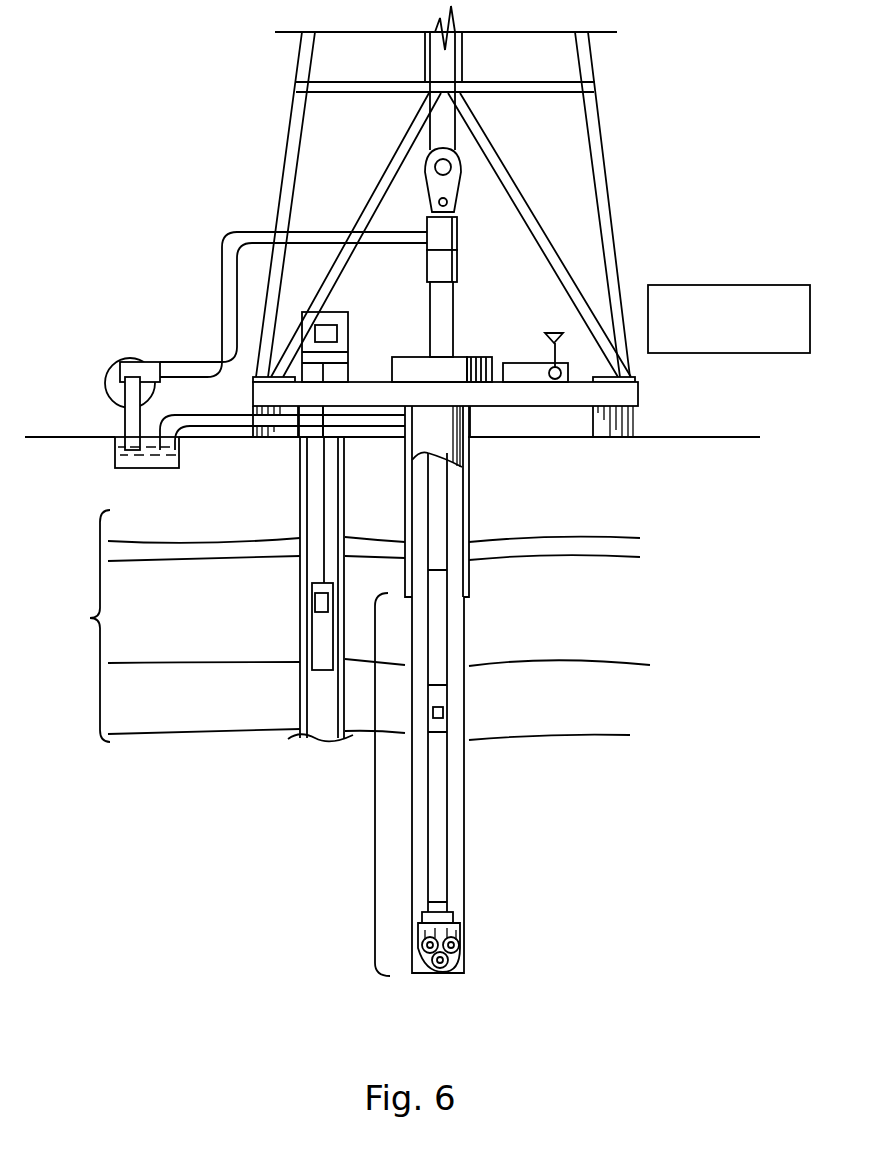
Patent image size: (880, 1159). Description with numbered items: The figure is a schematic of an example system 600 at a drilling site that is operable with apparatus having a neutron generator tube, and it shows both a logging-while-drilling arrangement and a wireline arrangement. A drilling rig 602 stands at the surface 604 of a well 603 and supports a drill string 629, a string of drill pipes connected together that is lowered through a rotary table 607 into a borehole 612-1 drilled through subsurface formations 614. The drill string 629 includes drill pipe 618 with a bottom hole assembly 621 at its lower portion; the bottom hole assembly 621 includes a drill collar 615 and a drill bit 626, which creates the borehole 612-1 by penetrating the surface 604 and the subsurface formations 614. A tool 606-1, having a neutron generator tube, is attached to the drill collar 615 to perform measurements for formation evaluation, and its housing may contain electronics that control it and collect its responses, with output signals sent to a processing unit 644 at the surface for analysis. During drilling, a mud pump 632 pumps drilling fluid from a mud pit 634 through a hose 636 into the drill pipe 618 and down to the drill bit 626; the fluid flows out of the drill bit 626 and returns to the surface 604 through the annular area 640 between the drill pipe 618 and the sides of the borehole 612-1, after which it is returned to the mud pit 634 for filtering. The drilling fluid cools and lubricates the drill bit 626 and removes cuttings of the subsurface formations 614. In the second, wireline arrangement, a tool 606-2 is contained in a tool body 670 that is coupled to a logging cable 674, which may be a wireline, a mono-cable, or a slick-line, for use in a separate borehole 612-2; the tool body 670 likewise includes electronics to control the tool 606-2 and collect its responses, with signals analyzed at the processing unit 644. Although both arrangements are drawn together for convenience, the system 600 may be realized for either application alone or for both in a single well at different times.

The system 600 is at (205, 58).
The drilling rig 602 is at (598, 101).
The well 603 is at (481, 435).
The surface 604 is at (655, 437).
The tool 606-1 is at (443, 712).
The tool 606-2 is at (322, 600).
The rotary table 607 is at (421, 357).
The borehole 612-1 is at (458, 543).
The borehole 612-2 is at (300, 533).
The subsurface formations 614 is at (345, 626).
The drill collar 615 is at (442, 693).
The drill pipe 618 is at (448, 610).
The bottom hole assembly 621 is at (375, 785).
The drill bit 626 is at (457, 938).
The drill string 629 is at (452, 490).
The mud pump 632 is at (138, 362).
The mud pit 634 is at (118, 438).
The hose 636 is at (222, 305).
The annular area 640 is at (457, 643).
The processing unit 644 is at (728, 285).
The tool body 670 is at (312, 633).
The logging cable 674 is at (323, 508).